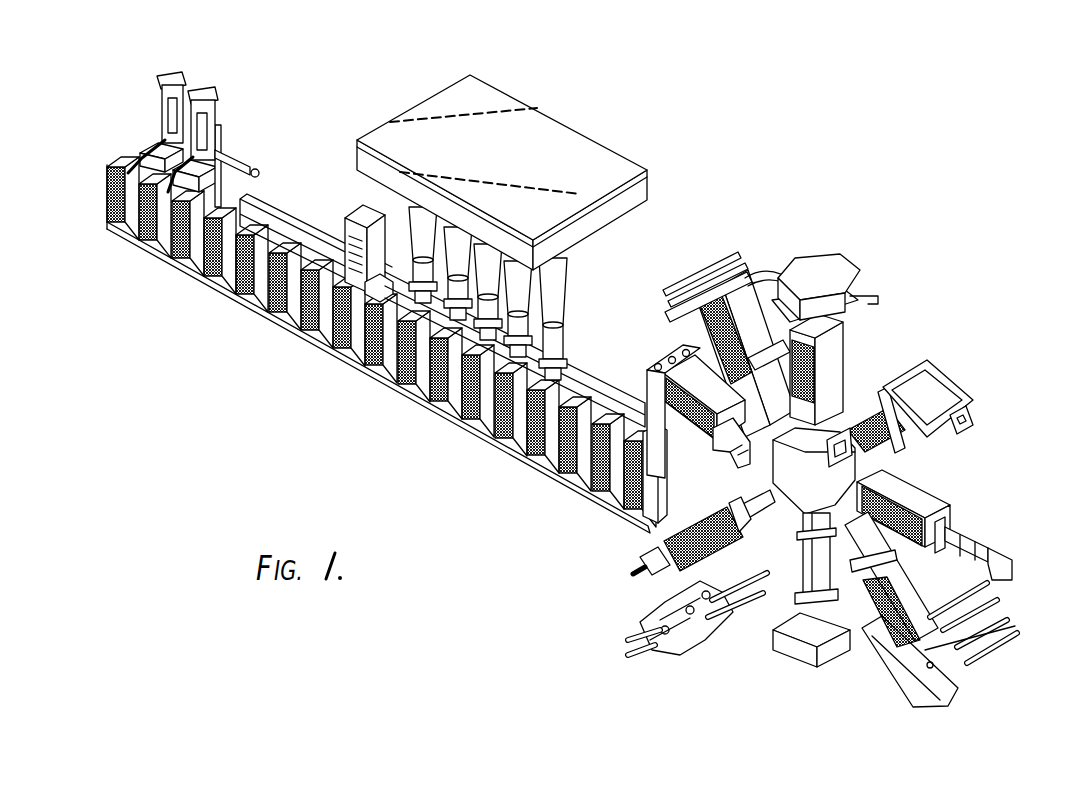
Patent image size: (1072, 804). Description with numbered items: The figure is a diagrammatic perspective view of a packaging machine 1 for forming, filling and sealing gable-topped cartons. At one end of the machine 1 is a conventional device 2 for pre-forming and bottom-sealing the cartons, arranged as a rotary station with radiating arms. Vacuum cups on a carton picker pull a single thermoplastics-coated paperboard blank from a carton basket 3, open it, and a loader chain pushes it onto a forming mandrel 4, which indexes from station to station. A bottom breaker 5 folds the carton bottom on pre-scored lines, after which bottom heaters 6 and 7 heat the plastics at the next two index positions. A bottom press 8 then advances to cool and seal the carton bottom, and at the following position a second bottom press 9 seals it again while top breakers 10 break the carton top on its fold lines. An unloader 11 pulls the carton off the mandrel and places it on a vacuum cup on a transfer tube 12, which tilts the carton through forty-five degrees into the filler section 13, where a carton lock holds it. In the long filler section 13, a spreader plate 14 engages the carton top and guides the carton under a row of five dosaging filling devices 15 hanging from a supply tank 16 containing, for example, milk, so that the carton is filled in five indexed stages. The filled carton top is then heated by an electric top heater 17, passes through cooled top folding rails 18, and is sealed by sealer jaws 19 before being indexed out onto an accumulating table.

The machine 1 is at (350, 390).
The device for pre-forming cartons 2 is at (803, 483).
The carton basket 3 is at (977, 670).
The forming mandrel 4 is at (810, 563).
The bottom breaker 5 is at (973, 527).
The bottom heater 6 is at (933, 400).
The bottom heater 7 is at (823, 273).
The bottom press 8 is at (720, 250).
The bottom press 9 is at (647, 390).
The top breakers 10 is at (723, 457).
The unloader 11 is at (660, 623).
The transfer tube 12 is at (633, 557).
The filler section 13 is at (513, 443).
The spreader plate 14 is at (497, 343).
The dosaging filling devices 15 is at (457, 280).
The supply tank 16 is at (560, 140).
The electric top heater 17 is at (308, 215).
The cooled top folding rails 18 is at (156, 243).
The sealer jaws 19 is at (160, 168).